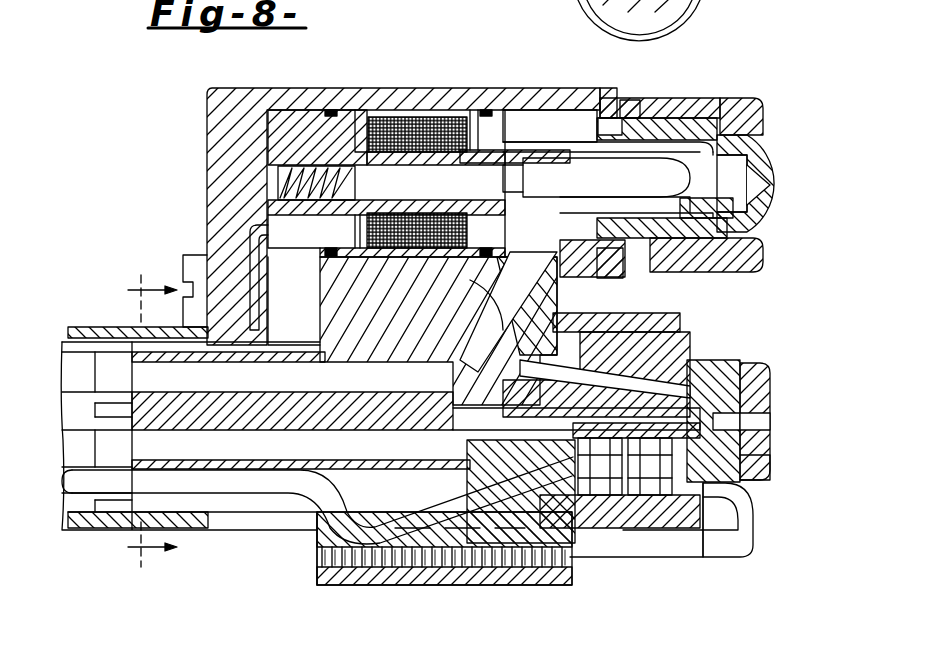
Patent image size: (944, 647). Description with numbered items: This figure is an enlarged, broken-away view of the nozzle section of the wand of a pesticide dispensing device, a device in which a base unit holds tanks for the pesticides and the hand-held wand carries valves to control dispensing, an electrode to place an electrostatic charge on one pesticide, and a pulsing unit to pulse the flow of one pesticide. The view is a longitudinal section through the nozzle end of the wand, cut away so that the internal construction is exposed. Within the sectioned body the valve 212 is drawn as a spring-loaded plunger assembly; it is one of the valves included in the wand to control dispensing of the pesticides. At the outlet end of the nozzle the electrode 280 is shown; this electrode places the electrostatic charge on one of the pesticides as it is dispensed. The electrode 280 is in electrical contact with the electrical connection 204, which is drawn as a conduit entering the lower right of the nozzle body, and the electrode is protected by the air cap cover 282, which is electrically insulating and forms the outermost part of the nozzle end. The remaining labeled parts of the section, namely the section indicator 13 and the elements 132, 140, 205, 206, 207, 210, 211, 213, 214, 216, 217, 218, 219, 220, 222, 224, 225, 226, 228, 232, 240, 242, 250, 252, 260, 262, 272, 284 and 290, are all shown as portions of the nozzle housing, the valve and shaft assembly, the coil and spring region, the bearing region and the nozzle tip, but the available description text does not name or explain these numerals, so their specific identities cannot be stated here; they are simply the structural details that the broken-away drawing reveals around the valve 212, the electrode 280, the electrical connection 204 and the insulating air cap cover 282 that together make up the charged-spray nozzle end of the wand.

The section line 13 is at (146, 418).
The end member 132 is at (78, 447).
The end cap 140 is at (77, 372).
The electrical connection 204 is at (732, 540).
The housing portion 205 is at (604, 0).
The shaft 206 is at (212, 483).
The tube 207 is at (288, 503).
The spring 210 is at (293, 158).
The core 211 is at (289, 112).
The valve 212 is at (655, 178).
The coil 213 is at (373, 114).
The seal 214 is at (488, 114).
The seal 216 is at (332, 108).
The bobbin wall 217 is at (484, 110).
The retainer 218 is at (625, 113).
The ring 219 is at (600, 117).
The chamber 220 is at (553, 141).
The body 222 is at (478, 294).
The plate 224 is at (693, 337).
The sleeve 225 is at (700, 120).
The seat 226 is at (773, 212).
The cap 228 is at (752, 110).
The flange 232 is at (144, 533).
The sleeve 240 is at (150, 375).
The spacer 242 is at (633, 153).
The lever 250 is at (610, 327).
The housing 252 is at (578, 292).
The elbow 260 is at (703, 497).
The block 262 is at (705, 365).
The housing 272 is at (403, 90).
The electrode 280 is at (745, 403).
The air cap cover 282 is at (757, 458).
The slot 284 is at (748, 422).
The bearing 290 is at (713, 365).